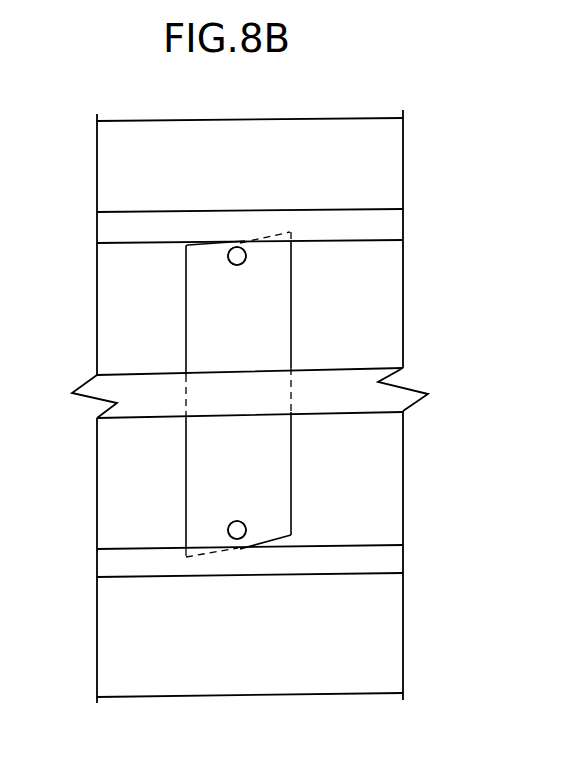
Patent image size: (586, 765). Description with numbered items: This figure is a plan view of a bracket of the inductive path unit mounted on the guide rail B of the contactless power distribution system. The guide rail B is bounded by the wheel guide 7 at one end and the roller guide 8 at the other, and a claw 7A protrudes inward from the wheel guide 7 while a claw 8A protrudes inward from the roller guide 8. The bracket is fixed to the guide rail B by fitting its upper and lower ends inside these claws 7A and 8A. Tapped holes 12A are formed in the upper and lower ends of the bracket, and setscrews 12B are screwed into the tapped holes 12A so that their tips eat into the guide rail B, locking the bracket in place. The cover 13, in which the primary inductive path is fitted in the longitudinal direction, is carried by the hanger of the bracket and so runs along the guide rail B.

The guide rail B is at (350, 112).
The wheel guide 7 is at (387, 140).
The claw 7A is at (390, 220).
The roller guide 8 is at (380, 632).
The claw 8A is at (390, 552).
The tapped hole 12A is at (246, 257).
The setscrew 12B is at (229, 251).
The cover 13 is at (325, 382).